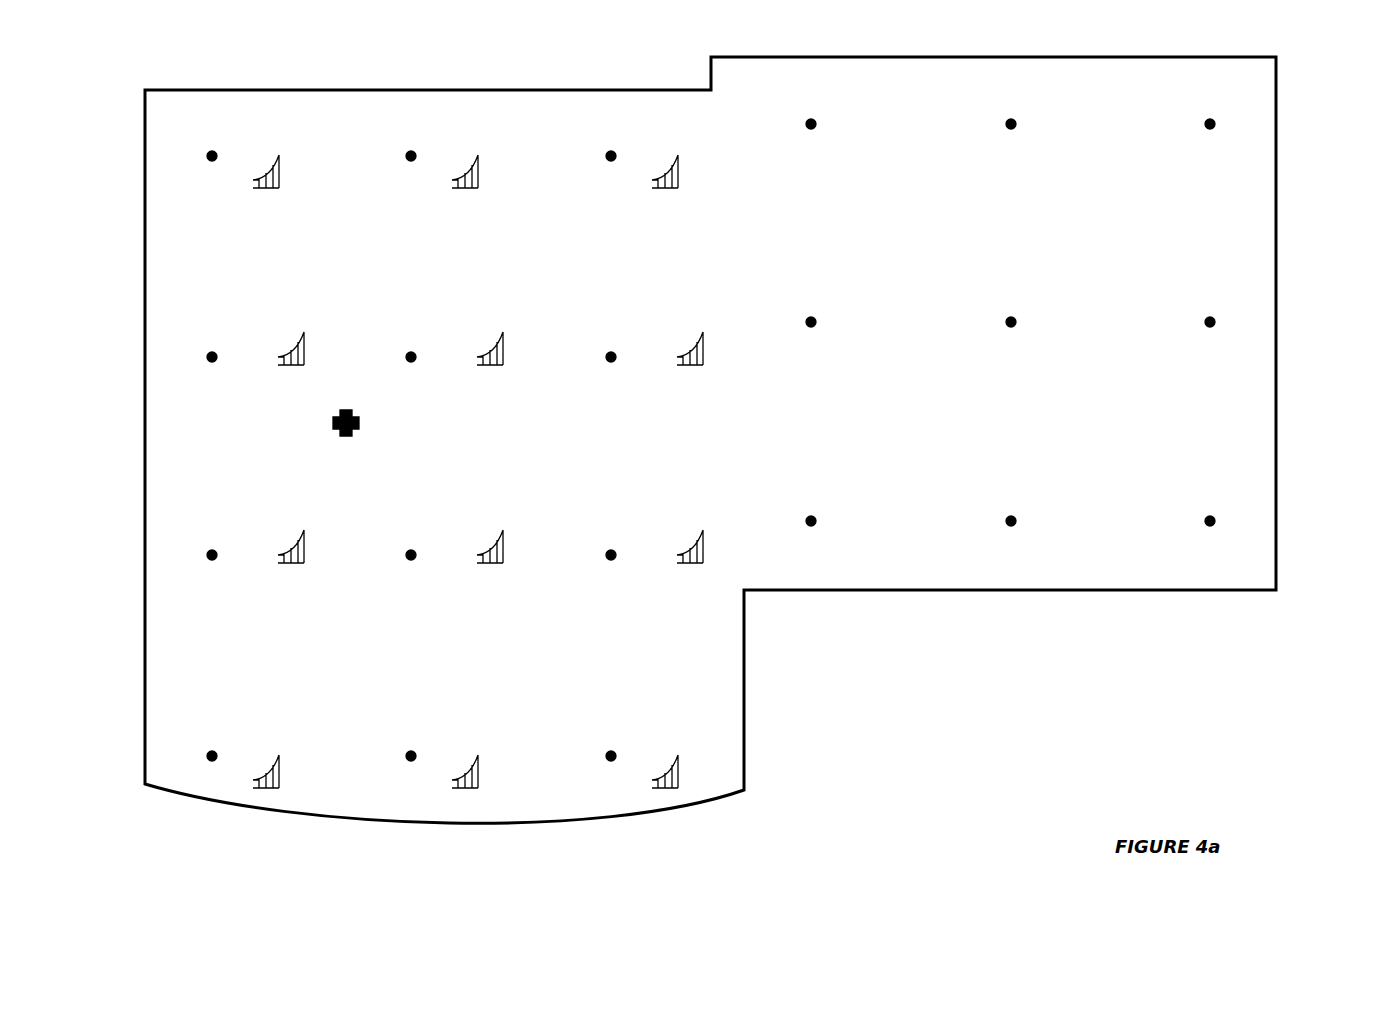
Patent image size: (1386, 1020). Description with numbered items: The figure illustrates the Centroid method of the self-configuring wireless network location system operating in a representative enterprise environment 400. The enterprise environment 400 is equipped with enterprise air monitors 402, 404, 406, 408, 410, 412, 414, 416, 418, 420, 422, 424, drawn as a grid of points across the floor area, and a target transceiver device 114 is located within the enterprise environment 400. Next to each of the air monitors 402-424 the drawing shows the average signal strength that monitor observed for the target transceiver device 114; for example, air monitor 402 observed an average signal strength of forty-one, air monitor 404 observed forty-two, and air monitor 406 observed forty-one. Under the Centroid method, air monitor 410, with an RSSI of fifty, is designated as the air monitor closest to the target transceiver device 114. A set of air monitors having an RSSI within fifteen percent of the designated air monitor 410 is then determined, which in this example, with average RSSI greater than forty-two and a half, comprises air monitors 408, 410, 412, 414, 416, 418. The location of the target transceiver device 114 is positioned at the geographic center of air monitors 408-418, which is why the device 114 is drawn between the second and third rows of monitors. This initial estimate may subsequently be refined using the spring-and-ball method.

The enterprise environment 400 is at (694, 426).
The enterprise air monitor 402 is at (212, 140).
The enterprise air monitor 404 is at (411, 140).
The enterprise air monitor 406 is at (611, 140).
The enterprise air monitor 408 is at (212, 341).
The enterprise air monitor 410 is at (411, 341).
The enterprise air monitor 412 is at (611, 341).
The enterprise air monitor 414 is at (212, 572).
The enterprise air monitor 416 is at (411, 572).
The enterprise air monitor 418 is at (611, 572).
The enterprise air monitor 420 is at (212, 740).
The enterprise air monitor 422 is at (411, 740).
The enterprise air monitor 424 is at (611, 740).
The target transceiver device 114 is at (349, 436).